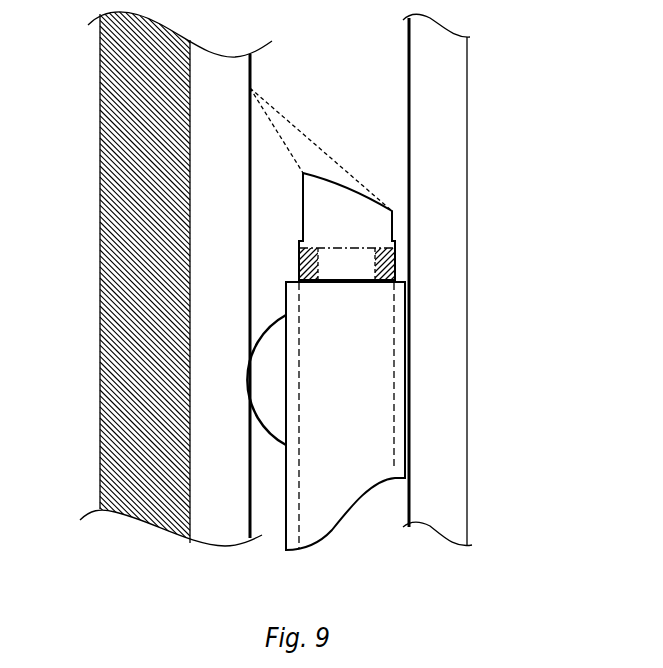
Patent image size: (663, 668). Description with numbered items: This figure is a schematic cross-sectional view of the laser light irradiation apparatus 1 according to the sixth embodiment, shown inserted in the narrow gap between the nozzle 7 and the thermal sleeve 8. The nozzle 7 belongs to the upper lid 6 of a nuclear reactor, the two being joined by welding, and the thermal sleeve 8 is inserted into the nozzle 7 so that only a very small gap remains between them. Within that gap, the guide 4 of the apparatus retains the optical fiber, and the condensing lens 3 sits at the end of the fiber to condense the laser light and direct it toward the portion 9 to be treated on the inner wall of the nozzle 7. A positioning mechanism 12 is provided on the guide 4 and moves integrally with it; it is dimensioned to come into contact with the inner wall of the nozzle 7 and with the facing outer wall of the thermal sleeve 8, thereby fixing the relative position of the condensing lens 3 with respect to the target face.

The laser light irradiation apparatus 1 is at (402, 268).
The condensing lens 3 is at (358, 238).
The guide 4 is at (360, 307).
The upper lid 6 is at (145, 203).
The nozzle 7 is at (200, 289).
The thermal sleeve 8 is at (437, 147).
The portion to be treated 9 is at (250, 87).
The positioning mechanism 12 is at (270, 392).